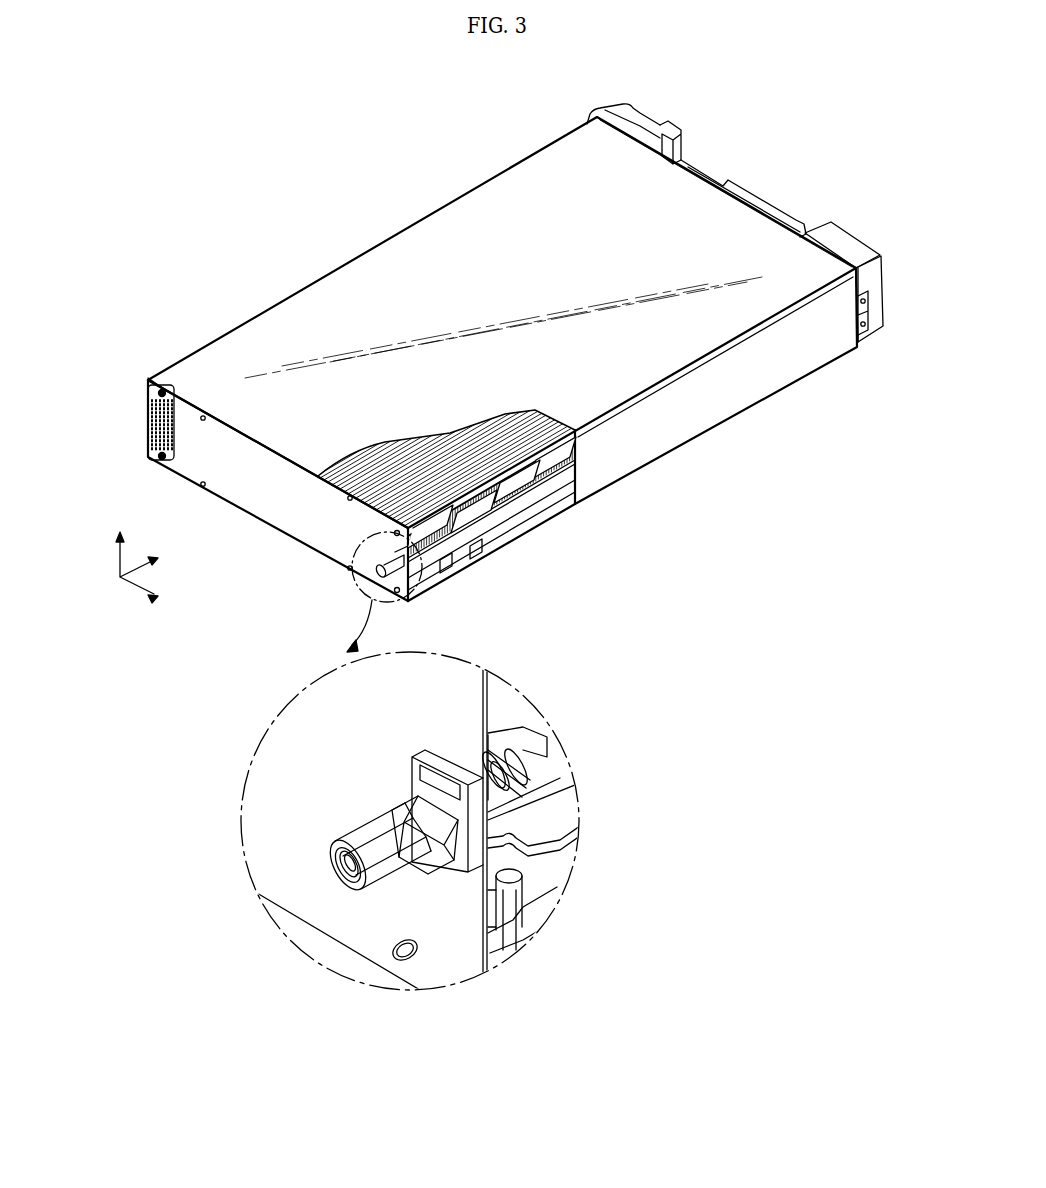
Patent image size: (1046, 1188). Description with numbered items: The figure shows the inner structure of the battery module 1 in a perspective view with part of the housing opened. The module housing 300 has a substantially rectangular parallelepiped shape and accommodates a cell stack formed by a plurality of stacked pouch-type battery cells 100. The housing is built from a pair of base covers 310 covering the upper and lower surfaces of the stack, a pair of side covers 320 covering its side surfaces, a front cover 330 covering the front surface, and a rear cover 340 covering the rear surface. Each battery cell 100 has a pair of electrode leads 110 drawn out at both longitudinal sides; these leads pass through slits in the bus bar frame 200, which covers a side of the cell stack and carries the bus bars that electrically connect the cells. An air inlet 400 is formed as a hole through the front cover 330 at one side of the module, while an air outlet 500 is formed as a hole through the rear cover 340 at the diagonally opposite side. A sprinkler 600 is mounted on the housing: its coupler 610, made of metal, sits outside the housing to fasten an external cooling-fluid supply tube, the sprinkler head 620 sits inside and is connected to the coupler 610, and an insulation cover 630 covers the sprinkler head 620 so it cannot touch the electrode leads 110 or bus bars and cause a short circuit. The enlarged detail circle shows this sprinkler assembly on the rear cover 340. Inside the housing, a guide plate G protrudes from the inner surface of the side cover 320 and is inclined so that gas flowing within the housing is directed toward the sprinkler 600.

The battery module 1 is at (297, 136).
The battery cell 100 is at (373, 474).
The electrode lead 110 is at (507, 490).
The bus bar frame 200 is at (560, 431).
The module housing 300 is at (258, 316).
The base cover 310 is at (757, 308).
The side cover 320 is at (673, 432).
The front cover 330 is at (757, 204).
The rear cover 340 is at (292, 517).
The air inlet 400 is at (845, 234).
The air outlet 500 is at (150, 420).
The sprinkler 600 is at (346, 790).
The coupler 610 is at (388, 872).
The sprinkler head 620 is at (530, 808).
The insulation cover 630 is at (530, 770).
The guide plate G is at (492, 512).